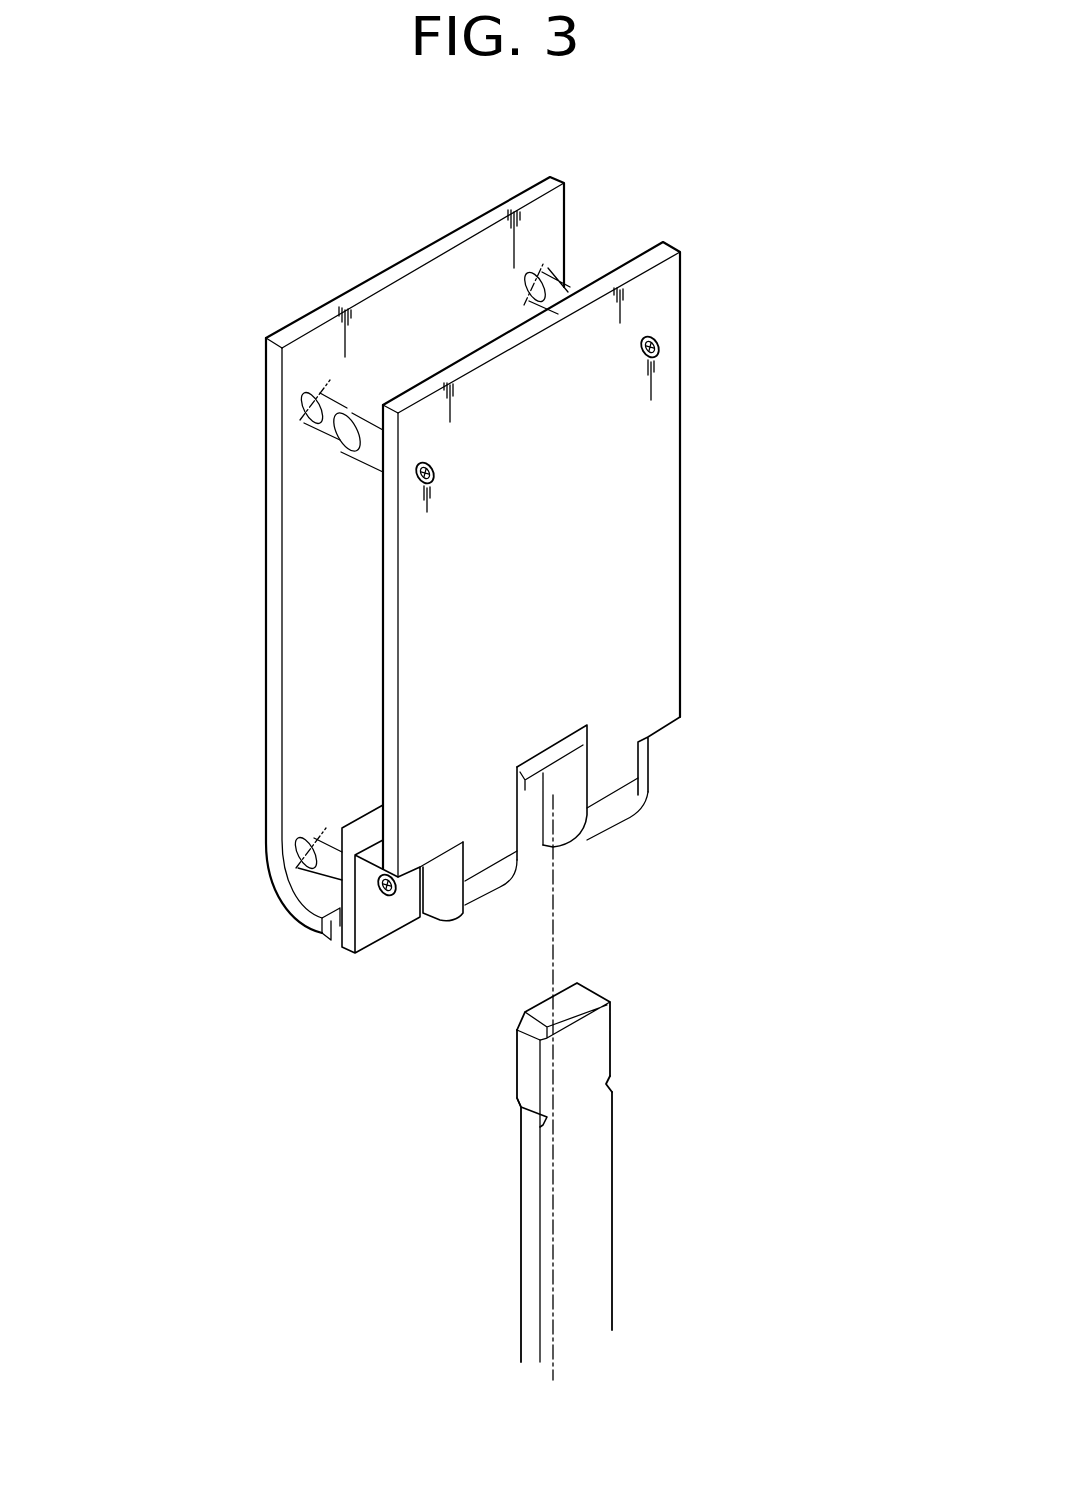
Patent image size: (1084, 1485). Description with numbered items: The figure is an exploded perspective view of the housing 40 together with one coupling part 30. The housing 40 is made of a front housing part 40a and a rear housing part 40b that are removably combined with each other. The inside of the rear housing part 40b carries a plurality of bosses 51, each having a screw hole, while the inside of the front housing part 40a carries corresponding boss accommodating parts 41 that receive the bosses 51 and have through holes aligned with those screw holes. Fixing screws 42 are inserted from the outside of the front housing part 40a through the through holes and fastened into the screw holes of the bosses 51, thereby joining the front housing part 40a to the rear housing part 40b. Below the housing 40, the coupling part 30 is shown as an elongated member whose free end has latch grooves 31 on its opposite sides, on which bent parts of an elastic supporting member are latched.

The coupling part 30 is at (650, 1210).
The latch groove 31 is at (545, 1125).
The housing 40 is at (748, 127).
The front housing part 40a is at (670, 243).
The rear housing part 40b is at (550, 175).
The boss accommodating part 41 is at (367, 453).
The fixing screw 42 is at (660, 342).
The boss 51 is at (530, 300).